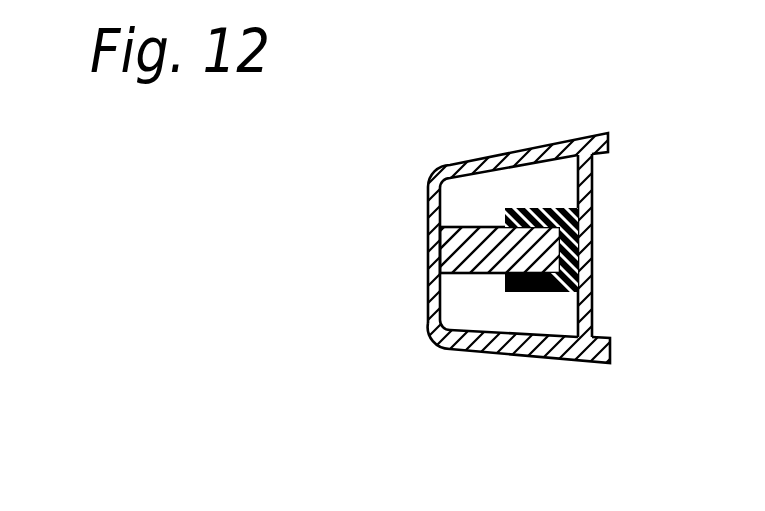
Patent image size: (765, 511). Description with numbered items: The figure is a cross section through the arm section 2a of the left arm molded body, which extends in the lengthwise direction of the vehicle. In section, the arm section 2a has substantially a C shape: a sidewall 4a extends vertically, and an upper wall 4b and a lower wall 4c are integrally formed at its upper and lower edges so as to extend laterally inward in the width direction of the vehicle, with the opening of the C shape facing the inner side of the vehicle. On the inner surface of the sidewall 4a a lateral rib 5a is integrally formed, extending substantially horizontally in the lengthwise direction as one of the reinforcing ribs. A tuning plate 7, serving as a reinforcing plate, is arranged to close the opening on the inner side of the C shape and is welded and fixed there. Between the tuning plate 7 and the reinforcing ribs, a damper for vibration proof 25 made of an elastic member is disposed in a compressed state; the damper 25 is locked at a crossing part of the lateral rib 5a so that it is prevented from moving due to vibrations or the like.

The left arm section 2a is at (407, 255).
The sidewall 4a is at (428, 205).
The upper wall 4b is at (515, 151).
The lower wall 4c is at (515, 353).
The lateral rib 5a is at (474, 227).
The tuning plate 7 is at (594, 193).
The damper for vibration proof 25 is at (543, 208).